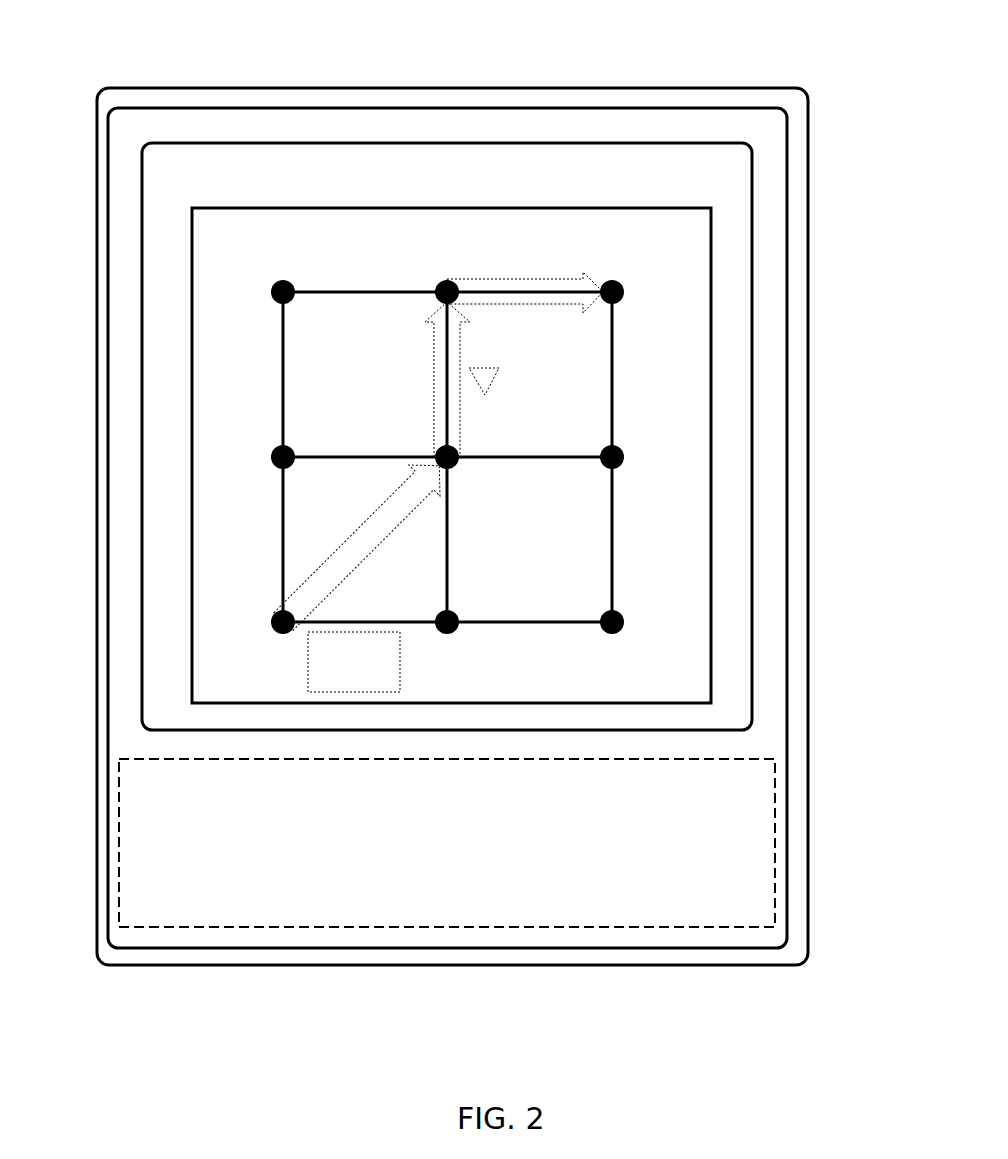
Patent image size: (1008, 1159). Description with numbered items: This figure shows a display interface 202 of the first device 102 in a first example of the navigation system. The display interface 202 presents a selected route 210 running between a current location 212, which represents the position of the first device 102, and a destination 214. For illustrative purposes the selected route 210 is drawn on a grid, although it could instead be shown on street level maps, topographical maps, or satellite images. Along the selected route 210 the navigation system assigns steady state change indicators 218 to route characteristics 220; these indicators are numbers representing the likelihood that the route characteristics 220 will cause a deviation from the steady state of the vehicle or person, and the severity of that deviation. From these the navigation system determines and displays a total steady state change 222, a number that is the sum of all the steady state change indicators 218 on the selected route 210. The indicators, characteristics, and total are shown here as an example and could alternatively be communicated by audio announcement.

The first device 102 is at (215, 98).
The display interface 202 is at (388, 247).
The selected route 210 is at (427, 322).
The current location 212 is at (283, 620).
The destination 214 is at (612, 292).
The steady state change indicators 218 is at (437, 411).
The route characteristics 220 is at (485, 395).
The total steady state change 222 is at (354, 662).